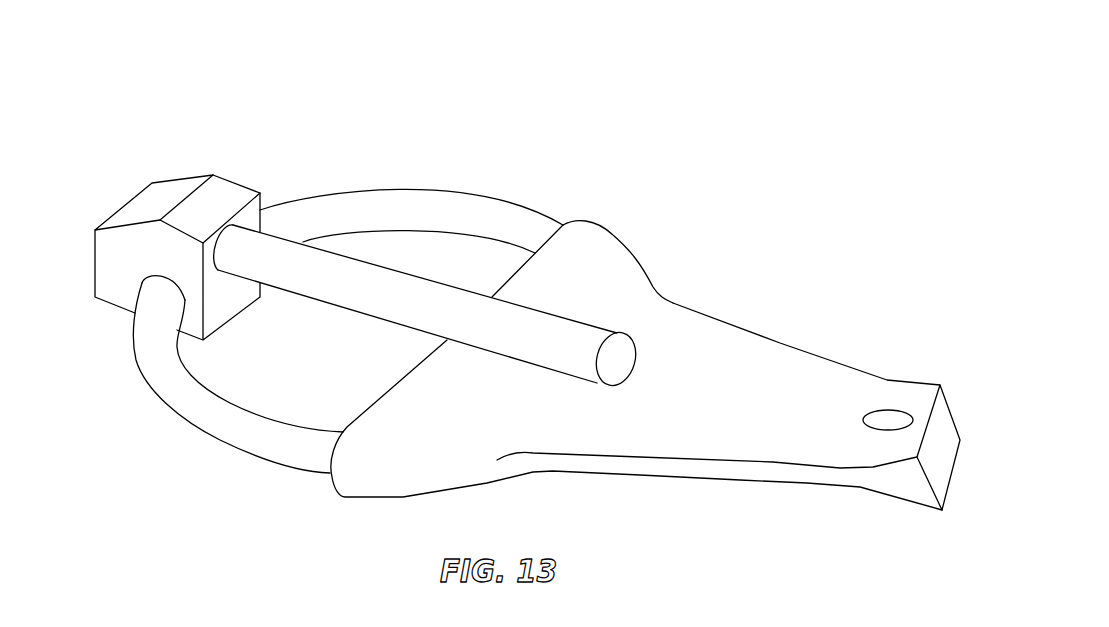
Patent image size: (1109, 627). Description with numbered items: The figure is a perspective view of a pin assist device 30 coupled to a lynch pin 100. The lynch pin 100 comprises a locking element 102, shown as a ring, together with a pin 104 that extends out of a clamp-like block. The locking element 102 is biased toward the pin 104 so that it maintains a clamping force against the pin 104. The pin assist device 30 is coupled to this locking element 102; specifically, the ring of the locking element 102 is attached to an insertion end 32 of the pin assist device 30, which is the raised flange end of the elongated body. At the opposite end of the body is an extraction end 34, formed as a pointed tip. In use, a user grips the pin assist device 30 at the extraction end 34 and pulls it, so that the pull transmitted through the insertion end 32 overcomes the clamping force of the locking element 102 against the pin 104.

The lynch pin 100 is at (168, 125).
The locking element 102 is at (397, 205).
The pin 104 is at (342, 283).
The pin assist device 30 is at (790, 330).
The insertion end 32 is at (583, 257).
The extraction end 34 is at (905, 480).